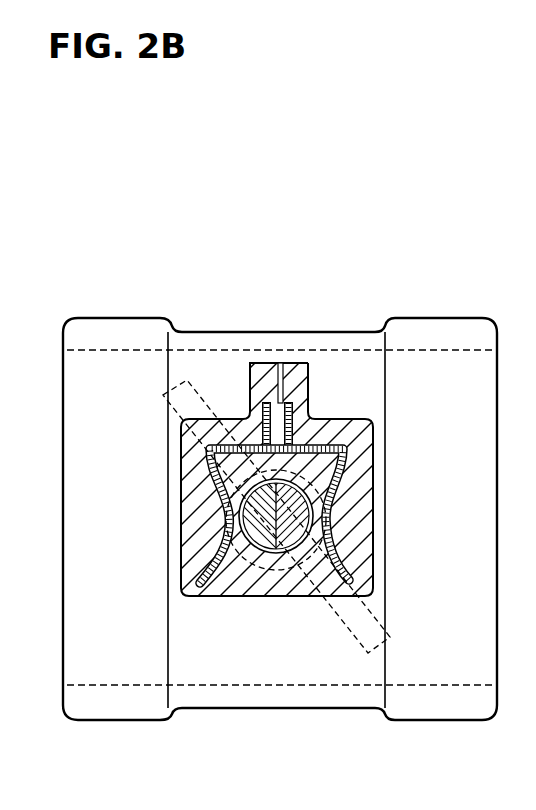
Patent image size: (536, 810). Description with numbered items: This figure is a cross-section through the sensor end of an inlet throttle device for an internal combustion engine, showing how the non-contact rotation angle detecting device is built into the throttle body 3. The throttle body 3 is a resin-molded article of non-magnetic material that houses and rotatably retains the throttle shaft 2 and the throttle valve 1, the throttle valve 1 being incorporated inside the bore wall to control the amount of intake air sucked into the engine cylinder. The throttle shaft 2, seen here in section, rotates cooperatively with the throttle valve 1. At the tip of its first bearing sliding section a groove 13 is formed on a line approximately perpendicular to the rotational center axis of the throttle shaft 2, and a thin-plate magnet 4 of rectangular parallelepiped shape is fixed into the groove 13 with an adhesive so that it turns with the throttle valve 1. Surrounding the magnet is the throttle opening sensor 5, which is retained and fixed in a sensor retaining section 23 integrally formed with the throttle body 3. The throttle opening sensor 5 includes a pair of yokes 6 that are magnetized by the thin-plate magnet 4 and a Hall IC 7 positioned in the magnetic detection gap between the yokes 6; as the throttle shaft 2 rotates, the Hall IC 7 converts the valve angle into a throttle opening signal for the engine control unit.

The throttle valve 1 is at (467, 352).
The throttle shaft 2 is at (275, 520).
The throttle body 3 is at (120, 276).
The thin-plate magnet 4 is at (350, 572).
The throttle opening sensor 5 is at (230, 373).
The yokes 6 is at (213, 466).
The Hall IC 7 is at (284, 402).
The groove 13 is at (181, 588).
The sensor retaining section 23 is at (331, 418).